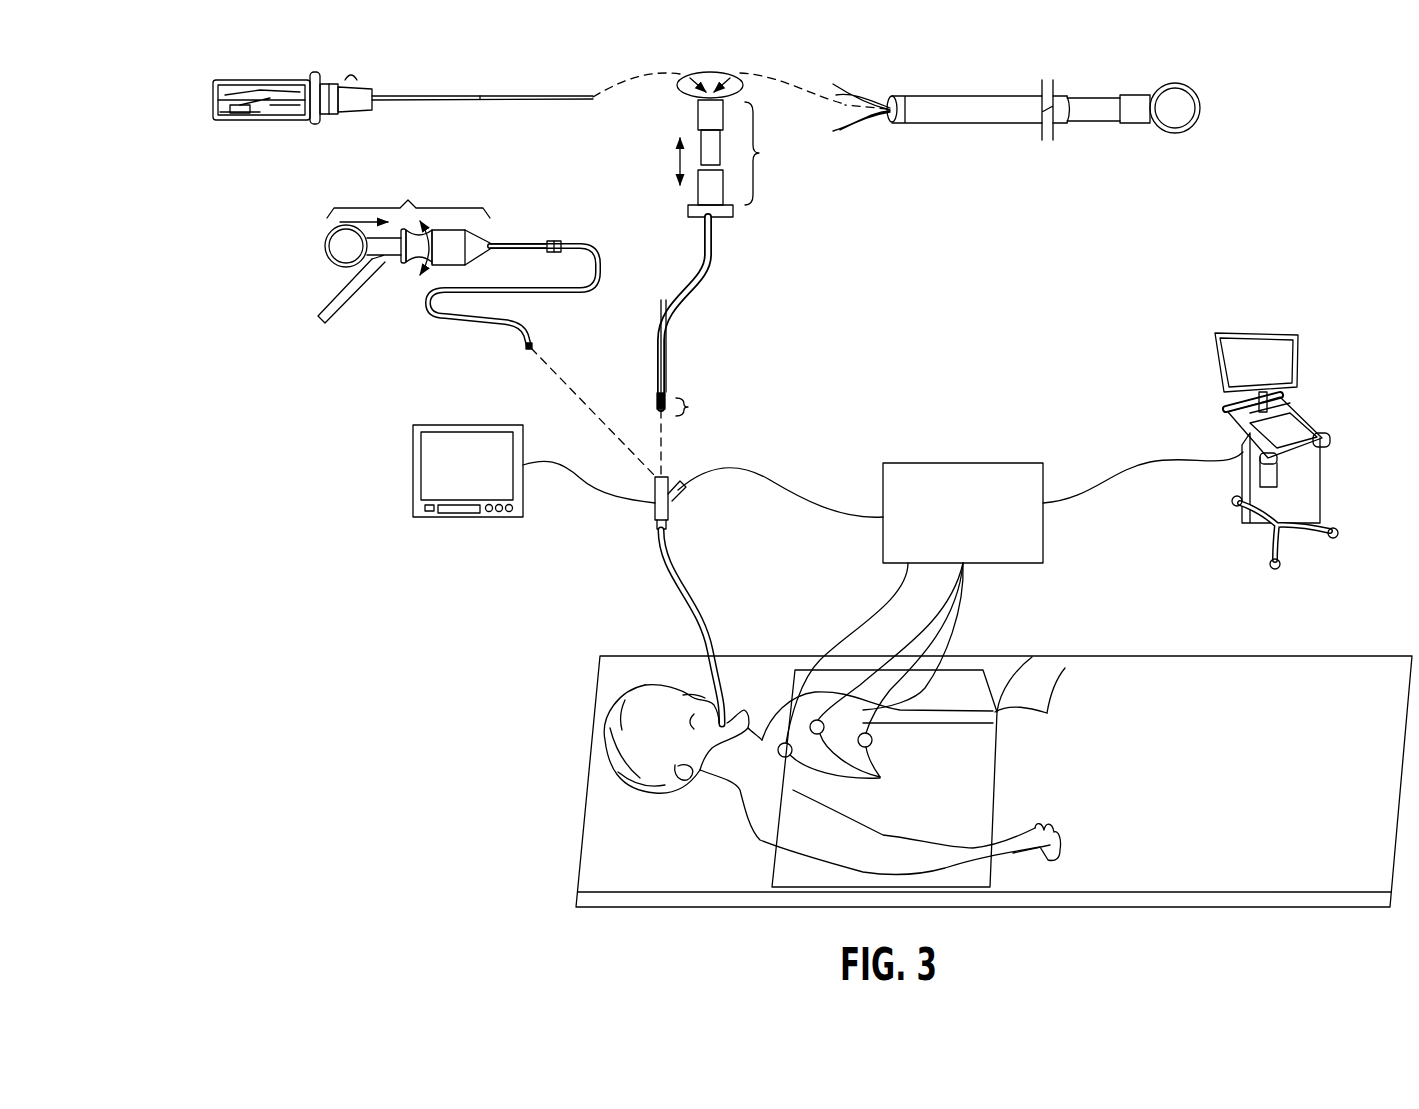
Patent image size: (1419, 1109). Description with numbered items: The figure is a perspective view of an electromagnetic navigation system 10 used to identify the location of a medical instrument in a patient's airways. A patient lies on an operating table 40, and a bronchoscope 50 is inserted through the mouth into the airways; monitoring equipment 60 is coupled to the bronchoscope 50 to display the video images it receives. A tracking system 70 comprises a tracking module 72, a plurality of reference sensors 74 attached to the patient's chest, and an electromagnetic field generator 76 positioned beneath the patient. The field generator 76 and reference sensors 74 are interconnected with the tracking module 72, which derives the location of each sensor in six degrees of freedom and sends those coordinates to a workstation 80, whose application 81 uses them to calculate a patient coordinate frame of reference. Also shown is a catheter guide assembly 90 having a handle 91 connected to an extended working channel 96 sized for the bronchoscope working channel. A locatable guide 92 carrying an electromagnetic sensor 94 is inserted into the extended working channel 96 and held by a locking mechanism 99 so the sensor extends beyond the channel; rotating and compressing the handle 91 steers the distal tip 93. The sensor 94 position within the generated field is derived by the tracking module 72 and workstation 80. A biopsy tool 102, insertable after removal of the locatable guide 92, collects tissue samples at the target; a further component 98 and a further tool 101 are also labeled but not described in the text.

The electromagnetic navigation system 10 is at (1274, 270).
The operating table 40 is at (593, 851).
The bronchoscope 50 is at (670, 577).
The monitoring equipment 60 is at (432, 517).
The tracking system 70 is at (1013, 422).
The tracking module 72 is at (979, 530).
The reference sensors 74 is at (880, 778).
The electromagnetic field generator 76 is at (790, 880).
The workstation 80 is at (1320, 468).
The application 81 is at (1298, 360).
The catheter guide assembly 90 is at (304, 246).
The handle 91 is at (559, 188).
The locatable guide 92 is at (528, 242).
The distal tip 93 is at (528, 350).
The electromagnetic sensor 94 is at (530, 344).
The extended working channel 96 is at (602, 268).
The locking mechanism 98 is at (697, 108).
The locking mechanism 99 is at (563, 246).
The biopsy tool 101 is at (210, 94).
The biopsy tool 102 is at (1205, 98).